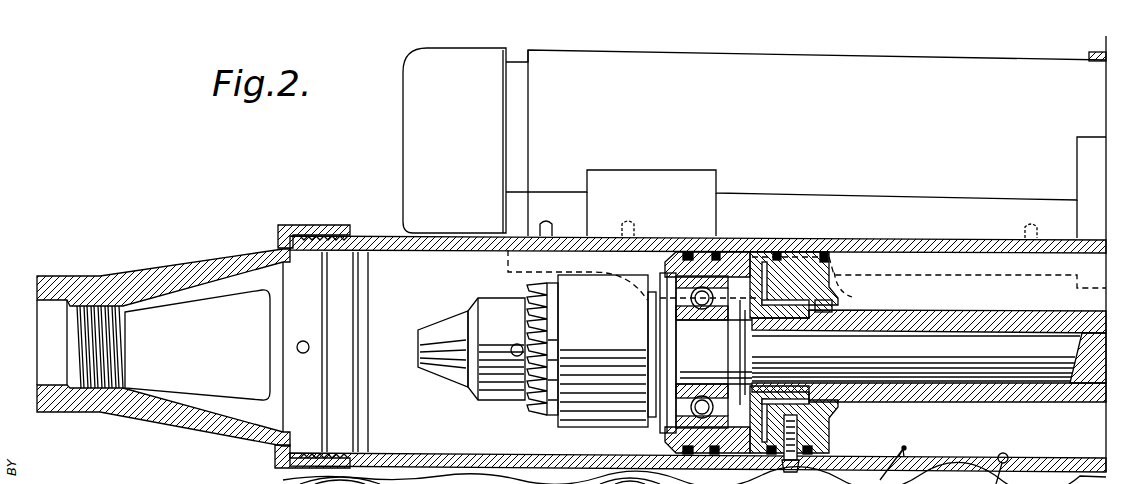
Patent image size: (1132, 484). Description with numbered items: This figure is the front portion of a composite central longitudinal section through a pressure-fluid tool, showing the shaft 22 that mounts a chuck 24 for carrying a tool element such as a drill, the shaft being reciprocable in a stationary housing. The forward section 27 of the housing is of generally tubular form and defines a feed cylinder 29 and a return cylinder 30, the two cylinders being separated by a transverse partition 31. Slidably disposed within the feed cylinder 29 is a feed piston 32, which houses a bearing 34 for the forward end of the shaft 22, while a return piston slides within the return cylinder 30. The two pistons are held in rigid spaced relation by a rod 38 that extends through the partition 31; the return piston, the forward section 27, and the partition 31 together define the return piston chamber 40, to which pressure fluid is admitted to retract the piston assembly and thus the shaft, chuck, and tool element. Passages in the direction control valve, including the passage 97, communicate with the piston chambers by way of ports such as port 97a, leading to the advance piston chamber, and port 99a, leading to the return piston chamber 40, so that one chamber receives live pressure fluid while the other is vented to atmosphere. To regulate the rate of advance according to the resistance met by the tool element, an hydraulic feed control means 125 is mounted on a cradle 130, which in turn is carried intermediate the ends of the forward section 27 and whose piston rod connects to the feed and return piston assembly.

The shaft 22 is at (975, 342).
The chuck 24 is at (495, 396).
The forward section 27 is at (968, 468).
The feed cylinder 29 is at (386, 250).
The return cylinder 30 is at (742, 481).
The transverse partition 31 is at (829, 428).
The feed piston 32 is at (662, 436).
The bearing 34 is at (736, 378).
The rod 38 is at (920, 319).
The return piston chamber 40 is at (887, 465).
The passage 97 is at (915, 257).
The port 97a is at (757, 249).
The port 99a is at (863, 277).
The hydraulic feed control means 125 is at (785, 68).
The cradle 130 is at (765, 197).